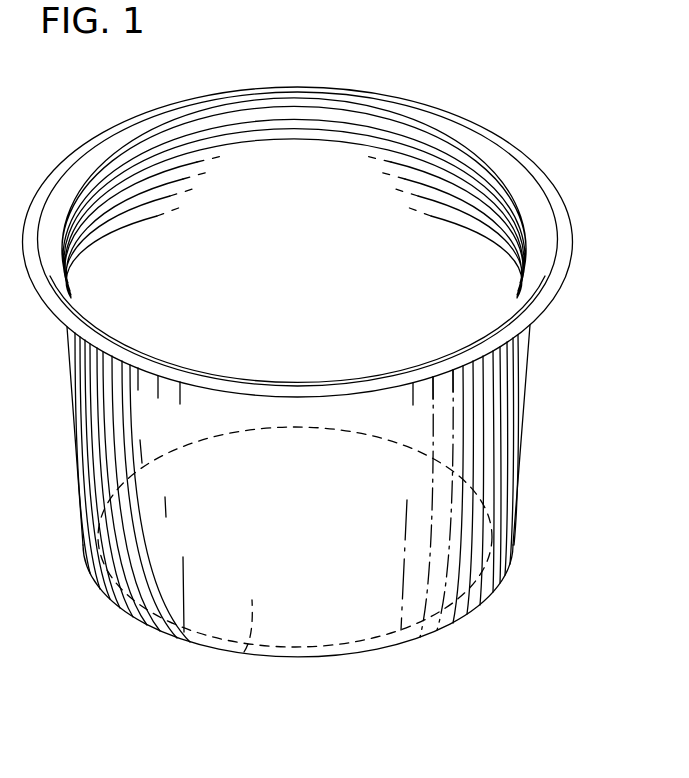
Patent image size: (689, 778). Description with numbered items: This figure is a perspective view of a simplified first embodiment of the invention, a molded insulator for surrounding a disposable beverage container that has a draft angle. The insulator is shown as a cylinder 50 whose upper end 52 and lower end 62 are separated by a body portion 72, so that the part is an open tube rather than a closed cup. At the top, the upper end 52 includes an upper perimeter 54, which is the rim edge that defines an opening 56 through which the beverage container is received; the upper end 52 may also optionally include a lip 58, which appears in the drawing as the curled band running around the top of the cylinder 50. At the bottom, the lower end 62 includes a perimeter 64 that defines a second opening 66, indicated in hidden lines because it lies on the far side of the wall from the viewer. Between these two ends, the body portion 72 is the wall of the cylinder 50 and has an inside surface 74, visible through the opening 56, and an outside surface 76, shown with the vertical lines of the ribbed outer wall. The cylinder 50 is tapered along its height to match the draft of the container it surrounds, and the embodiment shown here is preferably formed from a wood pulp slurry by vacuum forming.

The cylinder 50 is at (197, 70).
The upper end 52 is at (165, 110).
The upper perimeter 54 is at (278, 90).
The opening 56 is at (297, 236).
The lip 58 is at (384, 108).
The lower end 62 is at (310, 633).
The perimeter 64 is at (397, 645).
The opening 66 is at (243, 650).
The body portion 72 is at (485, 459).
The inside surface 74 is at (413, 143).
The outside surface 76 is at (495, 400).